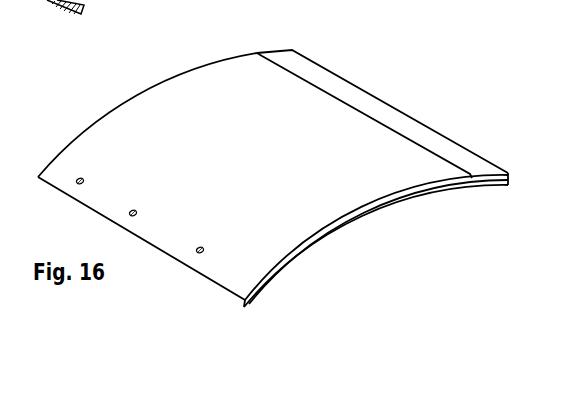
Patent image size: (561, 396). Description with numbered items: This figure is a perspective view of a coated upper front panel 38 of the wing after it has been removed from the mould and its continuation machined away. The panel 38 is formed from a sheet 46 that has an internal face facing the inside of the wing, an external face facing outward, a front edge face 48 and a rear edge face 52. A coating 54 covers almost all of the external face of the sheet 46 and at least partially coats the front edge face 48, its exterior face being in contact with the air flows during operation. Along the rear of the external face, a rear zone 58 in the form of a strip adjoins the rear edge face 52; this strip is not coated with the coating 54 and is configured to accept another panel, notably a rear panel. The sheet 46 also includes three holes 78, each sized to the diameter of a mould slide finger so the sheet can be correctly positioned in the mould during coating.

The upper front panel 38 is at (161, 67).
The coating 54 is at (230, 82).
The rear zone 58 is at (373, 109).
The rear edge face 52 is at (80, 15).
The sheet 46 is at (390, 218).
The front edge face 48 is at (253, 305).
The hole 78 is at (198, 248).